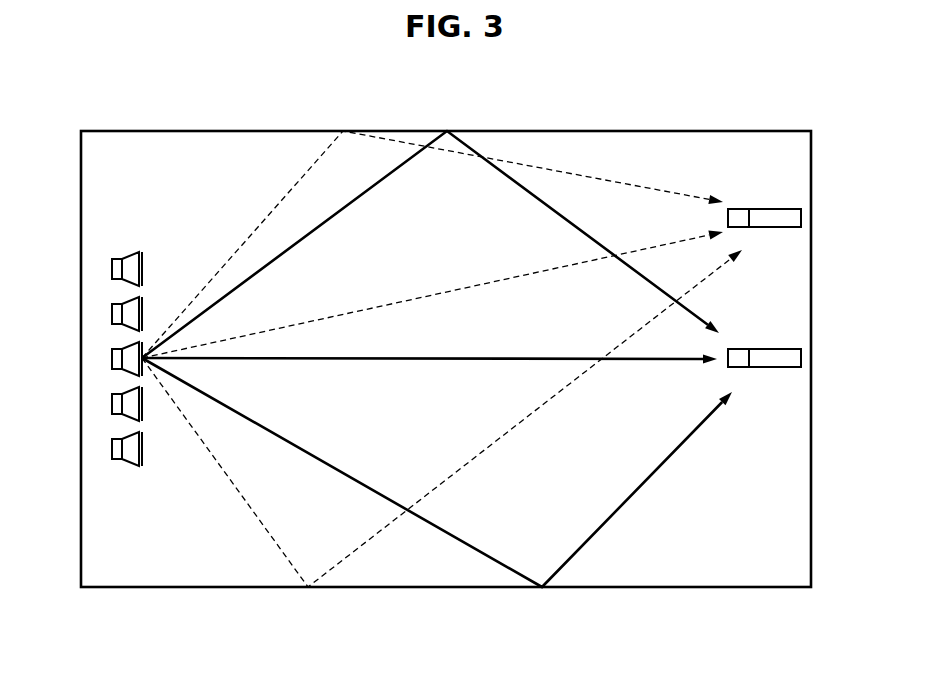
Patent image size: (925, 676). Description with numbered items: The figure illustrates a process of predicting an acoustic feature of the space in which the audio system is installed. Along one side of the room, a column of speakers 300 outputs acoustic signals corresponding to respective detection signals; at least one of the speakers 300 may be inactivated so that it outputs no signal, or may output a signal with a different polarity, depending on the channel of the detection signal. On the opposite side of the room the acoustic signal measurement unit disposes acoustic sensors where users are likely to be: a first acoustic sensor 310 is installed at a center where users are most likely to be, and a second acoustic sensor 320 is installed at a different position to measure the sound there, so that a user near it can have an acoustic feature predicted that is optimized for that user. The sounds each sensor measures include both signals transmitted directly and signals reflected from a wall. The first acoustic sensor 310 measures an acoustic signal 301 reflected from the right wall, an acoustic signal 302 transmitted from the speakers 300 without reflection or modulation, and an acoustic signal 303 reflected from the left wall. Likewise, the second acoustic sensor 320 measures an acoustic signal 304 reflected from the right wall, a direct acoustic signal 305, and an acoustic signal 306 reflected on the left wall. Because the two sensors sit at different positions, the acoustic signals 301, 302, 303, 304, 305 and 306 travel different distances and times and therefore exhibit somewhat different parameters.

The speakers 300 is at (116, 258).
The acoustic signal reflected from right wall 301 is at (466, 143).
The acoustic signal transmitted without reflection 302 is at (432, 358).
The acoustic signal reflected from left wall 303 is at (512, 570).
The acoustic signal reflected from right wall 304 is at (315, 160).
The acoustic signal transmitted without reflection 305 is at (543, 270).
The acoustic signal reflected on left wall 306 is at (280, 553).
The first acoustic sensor 310 is at (781, 351).
The second acoustic sensor 320 is at (781, 212).